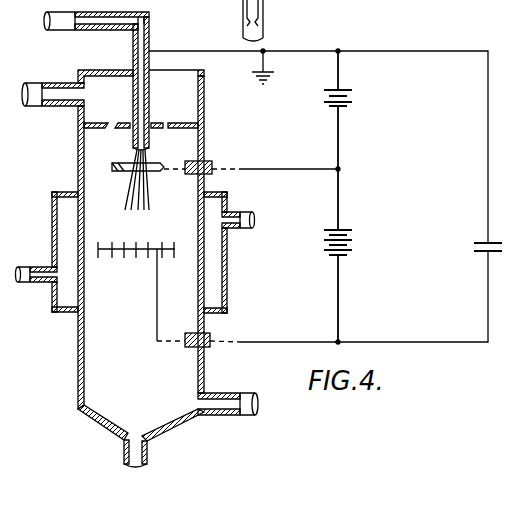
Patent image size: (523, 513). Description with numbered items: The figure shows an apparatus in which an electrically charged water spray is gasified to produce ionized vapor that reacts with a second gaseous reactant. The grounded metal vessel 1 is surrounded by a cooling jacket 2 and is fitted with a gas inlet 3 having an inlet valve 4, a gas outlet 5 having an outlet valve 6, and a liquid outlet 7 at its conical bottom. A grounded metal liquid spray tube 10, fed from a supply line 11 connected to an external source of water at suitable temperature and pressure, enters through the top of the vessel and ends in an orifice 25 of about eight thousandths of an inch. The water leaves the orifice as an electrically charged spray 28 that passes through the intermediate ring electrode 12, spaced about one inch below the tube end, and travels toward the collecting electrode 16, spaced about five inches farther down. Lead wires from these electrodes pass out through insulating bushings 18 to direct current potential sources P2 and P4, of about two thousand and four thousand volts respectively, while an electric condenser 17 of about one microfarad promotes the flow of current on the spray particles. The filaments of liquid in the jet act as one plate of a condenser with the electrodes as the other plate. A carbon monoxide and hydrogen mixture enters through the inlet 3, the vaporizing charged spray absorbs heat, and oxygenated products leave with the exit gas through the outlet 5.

The vessel 1 is at (78, 362).
The cooling jacket 2 is at (52, 228).
The gas inlet 3 is at (37, 108).
The inlet valve 4 is at (67, 93).
The gas outlet 5 is at (246, 416).
The outlet valve 6 is at (219, 394).
The liquid outlet 7 is at (147, 457).
The liquid spray tube 10 is at (133, 53).
The supply tube 11 is at (263, 7).
The intermediate ring electrode 12 is at (114, 172).
The collecting electrode 16 is at (113, 255).
The electric condenser 17 is at (492, 253).
The insulating bushings 18 is at (211, 165).
The orifice 25 is at (149, 153).
The electrically charged spray 28 is at (150, 200).
The direct current potential source P2 is at (352, 110).
The direct current potential source P4 is at (352, 255).